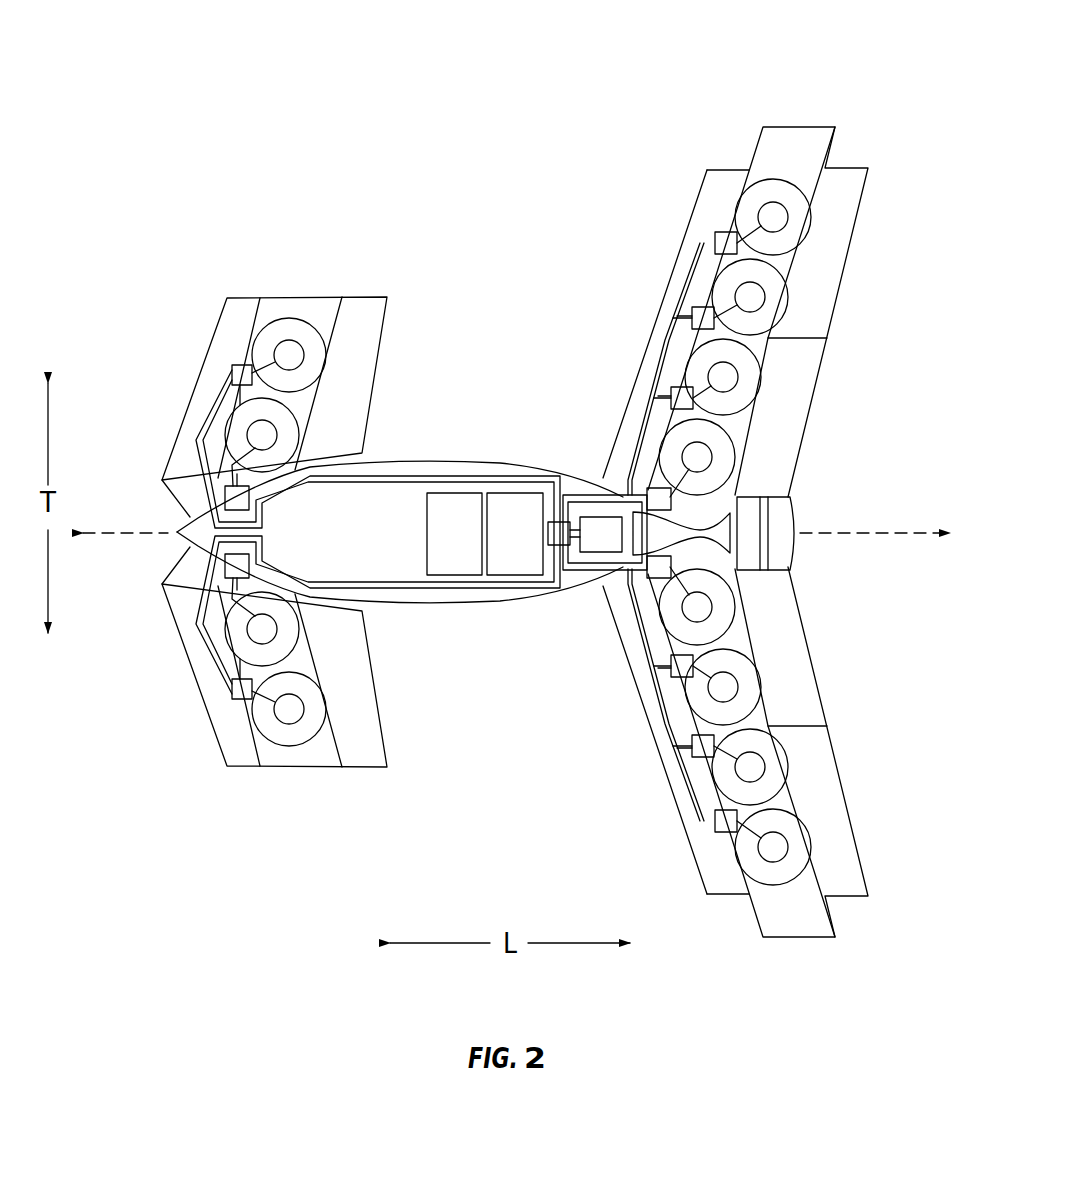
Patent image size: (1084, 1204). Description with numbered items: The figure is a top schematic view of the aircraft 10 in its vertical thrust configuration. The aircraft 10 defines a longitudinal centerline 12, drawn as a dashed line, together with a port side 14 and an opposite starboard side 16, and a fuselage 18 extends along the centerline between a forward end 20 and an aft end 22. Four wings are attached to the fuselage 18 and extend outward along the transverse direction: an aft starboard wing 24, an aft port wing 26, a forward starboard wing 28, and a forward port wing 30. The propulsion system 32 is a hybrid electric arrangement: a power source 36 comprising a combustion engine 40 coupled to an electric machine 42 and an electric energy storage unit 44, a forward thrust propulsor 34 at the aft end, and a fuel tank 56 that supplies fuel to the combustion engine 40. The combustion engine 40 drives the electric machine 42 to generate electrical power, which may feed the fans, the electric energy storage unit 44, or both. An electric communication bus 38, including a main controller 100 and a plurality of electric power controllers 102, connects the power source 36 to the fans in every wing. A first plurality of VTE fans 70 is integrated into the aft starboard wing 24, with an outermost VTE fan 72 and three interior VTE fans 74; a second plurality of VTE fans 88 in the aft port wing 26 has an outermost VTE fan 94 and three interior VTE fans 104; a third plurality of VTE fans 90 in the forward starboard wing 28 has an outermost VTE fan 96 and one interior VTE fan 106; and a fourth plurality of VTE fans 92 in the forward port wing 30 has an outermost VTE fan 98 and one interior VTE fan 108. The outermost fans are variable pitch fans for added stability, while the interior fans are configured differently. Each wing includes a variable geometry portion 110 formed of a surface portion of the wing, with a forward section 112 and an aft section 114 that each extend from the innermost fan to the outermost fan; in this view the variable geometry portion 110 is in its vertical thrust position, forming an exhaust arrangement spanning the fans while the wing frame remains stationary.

The aircraft 10 is at (457, 63).
The longitudinal centerline 12 is at (872, 530).
The port side 14 is at (447, 820).
The starboard side 16 is at (478, 230).
The fuselage 18 is at (352, 502).
The forward end 20 is at (152, 553).
The aft end 22 is at (838, 517).
The aft starboard wing 24 is at (790, 138).
The aft port wing 26 is at (790, 927).
The forward starboard wing 28 is at (282, 305).
The forward port wing 30 is at (270, 757).
The propulsion system 32 is at (533, 443).
The forward thrust propulsor 34 is at (785, 517).
The power source 36 is at (613, 555).
The electric communication bus 38 is at (553, 467).
The combustion engine 40 is at (681, 533).
The electric machine 42 is at (601, 534).
The electric energy storage unit 44 is at (515, 534).
The fuel tank 56 is at (454, 534).
The first plurality of VTE fans 70 is at (788, 385).
The outermost VTE fan 72 is at (797, 218).
The interior VTE fan 74 is at (775, 295).
The second plurality of VTE fans 88 is at (805, 718).
The third plurality of VTE fans 90 is at (322, 370).
The fourth plurality of VTE fans 92 is at (330, 703).
The outermost VTE fan 94 is at (798, 867).
The outermost VTE fan 96 is at (317, 320).
The outermost VTE fan 98 is at (282, 733).
The main controller 100 is at (557, 537).
The electric power controller 102 is at (225, 498).
The interior VTE fan 104 is at (745, 650).
The interior VTE fan 106 is at (290, 435).
The interior VTE fan 108 is at (290, 638).
The variable geometry portion 110 is at (666, 532).
The forward section 112 is at (683, 277).
The aft section 114 is at (787, 415).